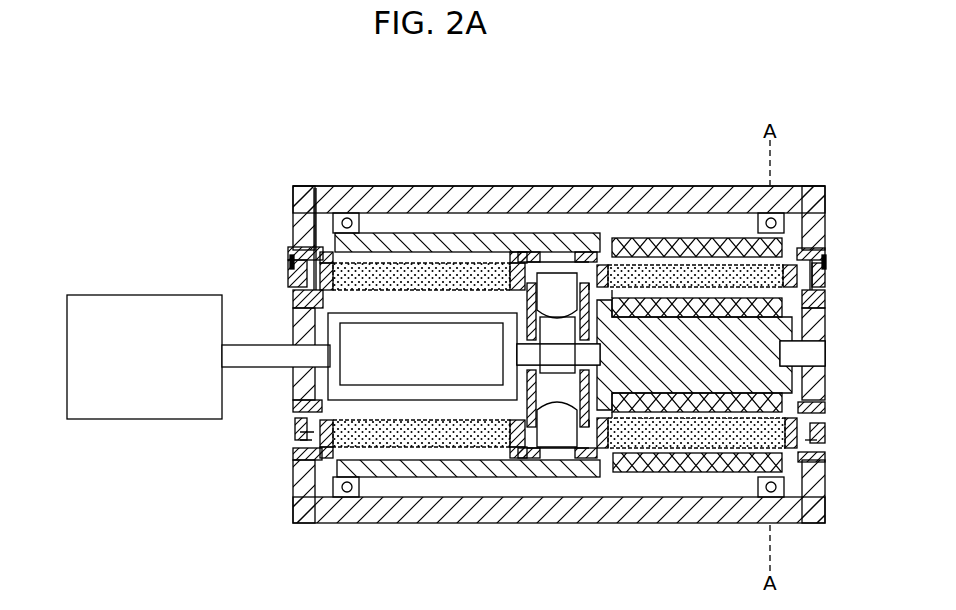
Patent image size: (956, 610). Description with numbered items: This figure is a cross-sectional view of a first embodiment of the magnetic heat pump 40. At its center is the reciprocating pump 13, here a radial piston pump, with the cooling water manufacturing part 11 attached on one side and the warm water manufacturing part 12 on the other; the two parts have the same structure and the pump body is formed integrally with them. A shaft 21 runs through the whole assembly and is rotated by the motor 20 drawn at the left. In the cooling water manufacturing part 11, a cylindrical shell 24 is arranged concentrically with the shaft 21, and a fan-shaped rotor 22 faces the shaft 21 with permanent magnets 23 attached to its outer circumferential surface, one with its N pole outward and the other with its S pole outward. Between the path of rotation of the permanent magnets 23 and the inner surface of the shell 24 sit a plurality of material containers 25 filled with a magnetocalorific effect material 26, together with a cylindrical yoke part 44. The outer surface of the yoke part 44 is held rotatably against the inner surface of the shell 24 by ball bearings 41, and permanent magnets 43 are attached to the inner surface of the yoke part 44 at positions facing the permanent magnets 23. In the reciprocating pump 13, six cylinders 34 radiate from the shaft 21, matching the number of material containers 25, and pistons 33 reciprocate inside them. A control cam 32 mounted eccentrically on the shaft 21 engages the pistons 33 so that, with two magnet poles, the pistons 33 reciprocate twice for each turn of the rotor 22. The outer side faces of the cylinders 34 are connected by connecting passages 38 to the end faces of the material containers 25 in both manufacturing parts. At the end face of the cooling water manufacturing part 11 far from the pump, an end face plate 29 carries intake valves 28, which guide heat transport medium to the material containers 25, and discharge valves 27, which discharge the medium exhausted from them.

The cooling water manufacturing part 11 is at (342, 143).
The warm water manufacturing part 12 is at (628, 152).
The reciprocating pump 13 is at (588, 152).
The motor 20 is at (170, 407).
The shaft 21 is at (290, 412).
The rotor 22 is at (385, 392).
The permanent magnets 23 is at (438, 374).
The cylindrical shell 24 is at (415, 186).
The material containers 25 is at (473, 264).
The magnetocalorific effect material 26 is at (507, 268).
The discharge valves 27 is at (290, 252).
The intake valves 28 is at (313, 188).
The end face plate 29 is at (298, 498).
The control cam 32 is at (528, 432).
The pistons 33 is at (572, 378).
The cylinders 34 is at (588, 418).
The connecting passages 38 is at (548, 272).
The magnetic heat pump 40 is at (748, 108).
The ball bearings 41 is at (353, 217).
The permanent magnets 43 is at (660, 238).
The yoke part 44 is at (695, 238).